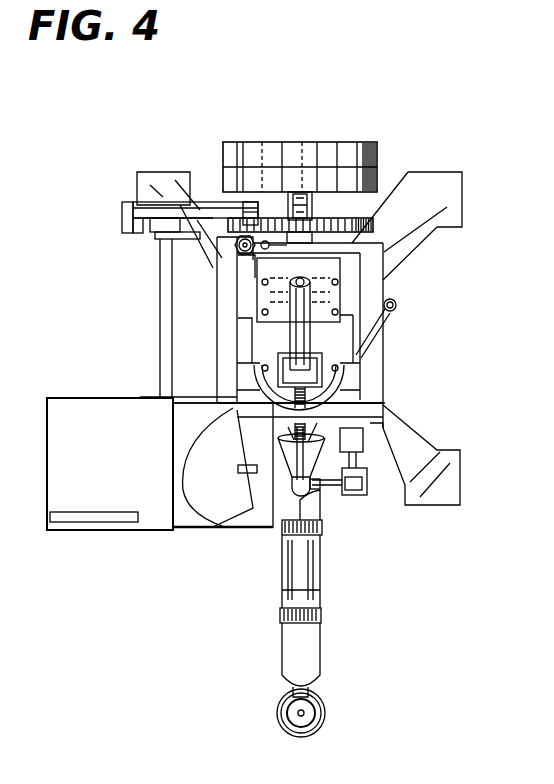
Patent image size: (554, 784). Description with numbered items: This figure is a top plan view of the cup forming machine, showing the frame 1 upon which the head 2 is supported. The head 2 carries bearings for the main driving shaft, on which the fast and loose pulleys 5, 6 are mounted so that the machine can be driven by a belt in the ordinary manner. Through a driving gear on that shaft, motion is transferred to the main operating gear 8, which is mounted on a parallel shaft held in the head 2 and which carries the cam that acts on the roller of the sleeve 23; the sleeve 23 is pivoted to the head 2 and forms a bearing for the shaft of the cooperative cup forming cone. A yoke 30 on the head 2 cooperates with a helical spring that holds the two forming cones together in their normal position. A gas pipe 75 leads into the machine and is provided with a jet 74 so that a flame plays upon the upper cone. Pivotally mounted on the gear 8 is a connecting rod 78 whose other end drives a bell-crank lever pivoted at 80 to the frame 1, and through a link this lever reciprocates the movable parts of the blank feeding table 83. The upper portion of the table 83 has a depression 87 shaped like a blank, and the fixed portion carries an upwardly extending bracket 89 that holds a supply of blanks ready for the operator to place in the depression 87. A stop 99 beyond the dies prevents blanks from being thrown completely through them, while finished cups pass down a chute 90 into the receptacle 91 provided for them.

The frame 1 is at (410, 232).
The head 2 is at (355, 291).
The fast pulley 5 is at (378, 180).
The loose pulley 6 is at (370, 146).
The main operating gear 8 is at (332, 221).
The sleeve 23 is at (303, 345).
The yoke 30 is at (260, 386).
The jet 74 is at (310, 428).
The gas pipe 75 is at (397, 302).
The connecting rod 78 is at (198, 210).
The pivot 80 is at (171, 307).
The blank feeding table 83 is at (82, 412).
The depression 87 is at (192, 463).
The bracket 89 is at (107, 520).
The chute 90 is at (305, 645).
The receptacle 91 is at (317, 710).
The stop 99 is at (333, 490).